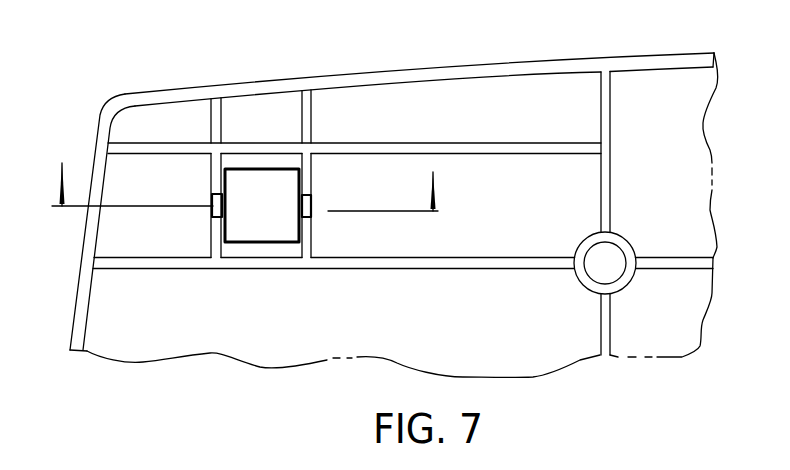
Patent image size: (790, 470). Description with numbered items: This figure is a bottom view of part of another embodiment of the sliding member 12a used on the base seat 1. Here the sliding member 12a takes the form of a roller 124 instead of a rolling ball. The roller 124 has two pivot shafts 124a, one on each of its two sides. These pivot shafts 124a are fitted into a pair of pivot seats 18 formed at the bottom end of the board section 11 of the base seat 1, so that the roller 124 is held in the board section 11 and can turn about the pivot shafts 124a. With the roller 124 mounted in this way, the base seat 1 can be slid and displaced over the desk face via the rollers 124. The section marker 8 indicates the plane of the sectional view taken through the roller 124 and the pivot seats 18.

The base seat 1 is at (489, 62).
The board section 11 is at (355, 74).
The sliding member 12a is at (241, 168).
The roller 124 is at (269, 187).
The pivot seats 18 is at (213, 200).
The pivot shafts 124a is at (214, 207).
The section line VIII-VIII 8 is at (252, 187).